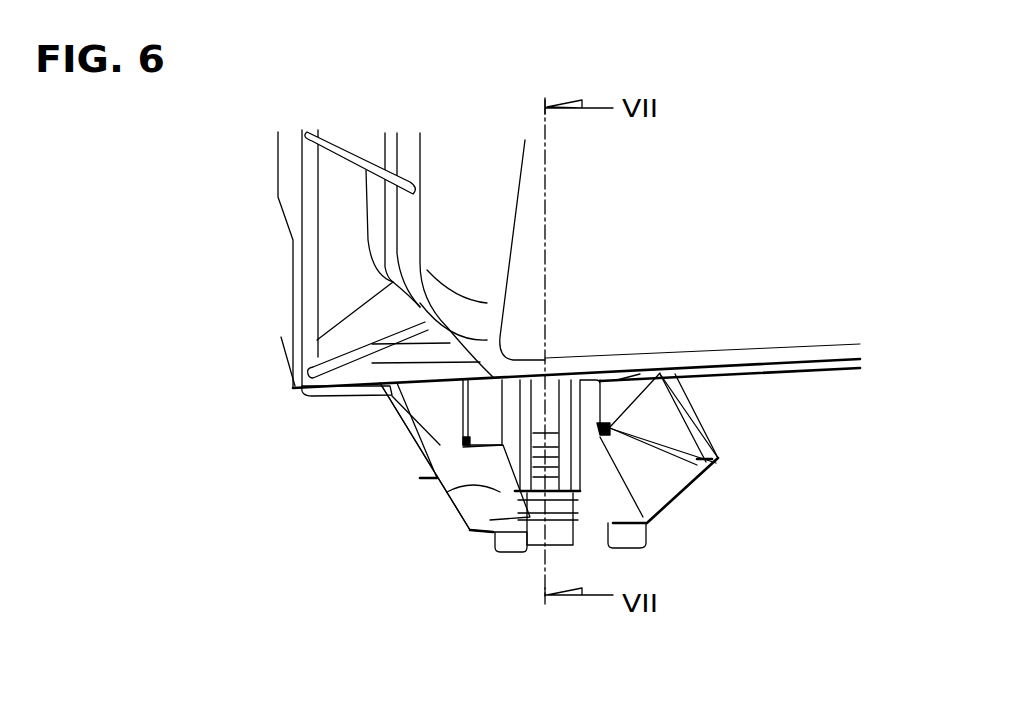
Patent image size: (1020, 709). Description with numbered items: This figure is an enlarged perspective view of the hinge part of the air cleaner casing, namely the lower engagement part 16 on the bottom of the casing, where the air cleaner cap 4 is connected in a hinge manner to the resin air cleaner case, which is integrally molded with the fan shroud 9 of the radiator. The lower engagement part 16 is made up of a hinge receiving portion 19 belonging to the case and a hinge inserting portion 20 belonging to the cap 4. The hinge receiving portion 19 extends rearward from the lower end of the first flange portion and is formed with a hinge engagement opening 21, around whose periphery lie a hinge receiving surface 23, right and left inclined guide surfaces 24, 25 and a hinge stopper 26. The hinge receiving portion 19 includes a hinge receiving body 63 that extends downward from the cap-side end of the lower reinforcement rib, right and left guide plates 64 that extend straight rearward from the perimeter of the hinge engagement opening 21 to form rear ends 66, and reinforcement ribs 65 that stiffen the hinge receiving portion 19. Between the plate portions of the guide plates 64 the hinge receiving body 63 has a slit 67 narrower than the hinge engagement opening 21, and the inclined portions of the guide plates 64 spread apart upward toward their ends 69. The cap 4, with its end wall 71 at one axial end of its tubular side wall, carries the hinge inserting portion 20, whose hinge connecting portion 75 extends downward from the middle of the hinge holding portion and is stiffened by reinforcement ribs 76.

The air cleaner cap 4 is at (482, 172).
The fan shroud 9 is at (276, 160).
The lower engagement part 16 is at (416, 557).
The hinge receiving portion 19 is at (486, 542).
The hinge inserting portion 20 is at (452, 395).
The hinge engagement opening 21 is at (718, 470).
The hinge receiving surface 23 is at (433, 495).
The inclined guide surface 24 is at (407, 423).
The inclined guide surface 25 is at (653, 413).
The hinge stopper 26 is at (630, 373).
The hinge receiving body 63 is at (535, 547).
The guide plates 64 is at (407, 447).
The reinforcement ribs 65 is at (437, 518).
The rear ends 66 is at (498, 545).
The slit 67 is at (600, 560).
The ends 69 is at (390, 395).
The end wall 71 is at (733, 248).
The hinge connecting portion 75 is at (596, 373).
The reinforcement ribs 76 is at (567, 373).